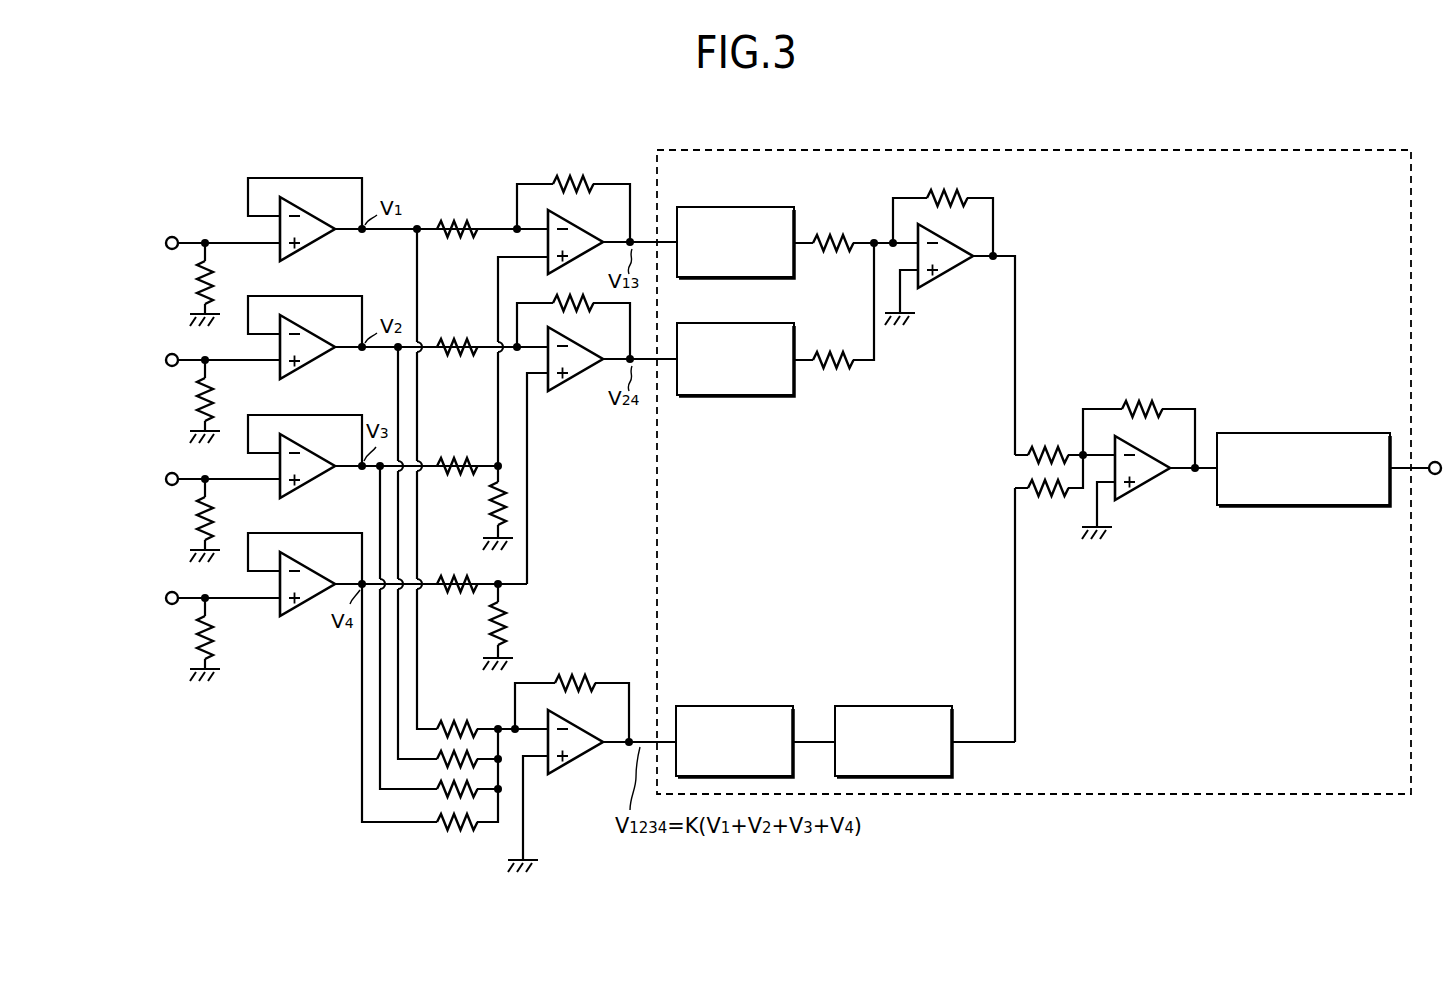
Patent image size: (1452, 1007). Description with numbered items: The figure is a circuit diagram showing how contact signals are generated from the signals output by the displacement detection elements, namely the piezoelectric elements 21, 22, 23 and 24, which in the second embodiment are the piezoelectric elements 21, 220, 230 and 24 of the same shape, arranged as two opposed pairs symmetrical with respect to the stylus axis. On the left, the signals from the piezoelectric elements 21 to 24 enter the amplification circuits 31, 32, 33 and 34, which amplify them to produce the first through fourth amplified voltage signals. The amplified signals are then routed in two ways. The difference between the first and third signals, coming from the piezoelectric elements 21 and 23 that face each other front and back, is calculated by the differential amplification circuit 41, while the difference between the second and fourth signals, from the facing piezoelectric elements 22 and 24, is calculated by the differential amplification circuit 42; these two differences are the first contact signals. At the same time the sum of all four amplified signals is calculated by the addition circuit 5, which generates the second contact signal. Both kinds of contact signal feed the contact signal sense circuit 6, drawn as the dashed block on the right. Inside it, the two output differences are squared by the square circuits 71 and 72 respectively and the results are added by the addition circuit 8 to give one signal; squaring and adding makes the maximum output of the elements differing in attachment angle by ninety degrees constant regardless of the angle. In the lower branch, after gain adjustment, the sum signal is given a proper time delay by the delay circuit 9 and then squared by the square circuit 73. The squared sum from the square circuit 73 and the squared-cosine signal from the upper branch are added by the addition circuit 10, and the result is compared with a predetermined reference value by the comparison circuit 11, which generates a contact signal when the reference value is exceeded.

The contact signal sense circuit 6 is at (1313, 150).
The piezoelectric element 21 is at (173, 237).
The piezoelectric element 22 is at (168, 354).
The piezoelectric element 220 is at (182, 373).
The piezoelectric element 23 is at (168, 472).
The piezoelectric element 230 is at (182, 490).
The piezoelectric element 24 is at (171, 592).
The amplification circuit 31 is at (308, 252).
The amplification circuit 32 is at (308, 370).
The amplification circuit 33 is at (308, 489).
The amplification circuit 34 is at (308, 607).
The differential amplification circuit 41 is at (568, 222).
The differential amplification circuit 42 is at (568, 339).
The addition circuit 5 is at (575, 765).
The square circuit 71 is at (750, 207).
The square circuit 72 is at (750, 323).
The square circuit 73 is at (930, 706).
The addition circuit 8 is at (944, 279).
The delay circuit 9 is at (770, 706).
The addition circuit 10 is at (1143, 489).
The comparison circuit 11 is at (1347, 433).